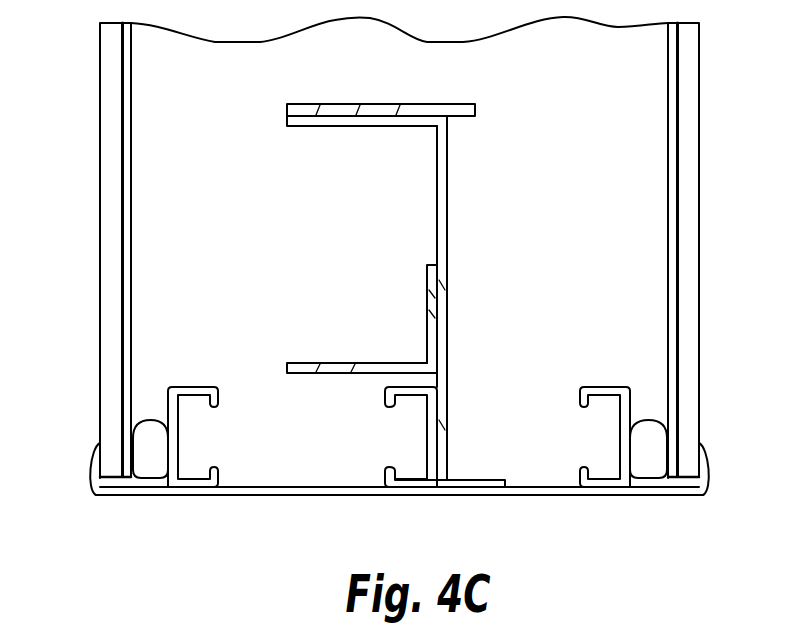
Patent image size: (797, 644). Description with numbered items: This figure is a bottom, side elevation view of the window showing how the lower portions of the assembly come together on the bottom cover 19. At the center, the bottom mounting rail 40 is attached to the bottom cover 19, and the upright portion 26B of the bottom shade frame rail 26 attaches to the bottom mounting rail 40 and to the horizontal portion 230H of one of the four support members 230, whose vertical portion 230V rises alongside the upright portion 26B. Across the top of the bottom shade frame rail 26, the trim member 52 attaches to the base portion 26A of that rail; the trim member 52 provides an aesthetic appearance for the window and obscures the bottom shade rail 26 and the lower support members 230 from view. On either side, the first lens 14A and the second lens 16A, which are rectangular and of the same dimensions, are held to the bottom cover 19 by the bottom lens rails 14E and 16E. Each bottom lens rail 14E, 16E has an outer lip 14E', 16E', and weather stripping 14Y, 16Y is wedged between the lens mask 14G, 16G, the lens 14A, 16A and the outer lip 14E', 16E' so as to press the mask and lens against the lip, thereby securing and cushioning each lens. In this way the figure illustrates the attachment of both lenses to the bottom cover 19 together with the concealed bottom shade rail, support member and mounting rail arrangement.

The first lens 14A is at (102, 242).
The lens mask 14G is at (127, 137).
The second lens 16A is at (702, 297).
The lens mask 16G is at (670, 138).
The trim member 52 is at (378, 104).
The bottom shade frame rail 26 is at (380, 301).
The base portion 26A is at (323, 128).
The upright portion 26B is at (448, 187).
The support member 230 is at (326, 295).
The vertical portion 230V is at (425, 278).
The horizontal portion 230H is at (307, 365).
The bottom mounting rail 40 is at (427, 422).
The weather stripping 14Y is at (147, 467).
The weather stripping 16Y is at (650, 473).
The bottom lens rail 14E is at (170, 519).
The bottom lens rail 16E is at (659, 516).
The outer lip 14E' is at (64, 452).
The outer lip 16E' is at (732, 452).
The bottom cover 19 is at (380, 493).